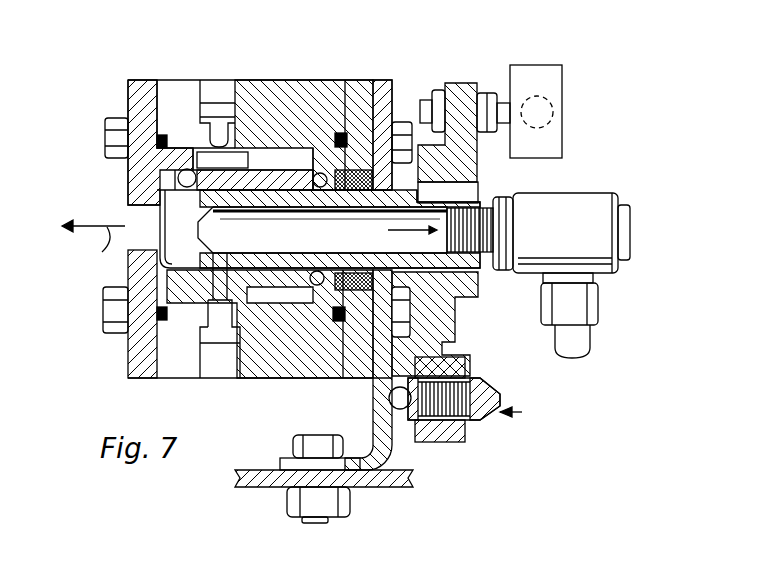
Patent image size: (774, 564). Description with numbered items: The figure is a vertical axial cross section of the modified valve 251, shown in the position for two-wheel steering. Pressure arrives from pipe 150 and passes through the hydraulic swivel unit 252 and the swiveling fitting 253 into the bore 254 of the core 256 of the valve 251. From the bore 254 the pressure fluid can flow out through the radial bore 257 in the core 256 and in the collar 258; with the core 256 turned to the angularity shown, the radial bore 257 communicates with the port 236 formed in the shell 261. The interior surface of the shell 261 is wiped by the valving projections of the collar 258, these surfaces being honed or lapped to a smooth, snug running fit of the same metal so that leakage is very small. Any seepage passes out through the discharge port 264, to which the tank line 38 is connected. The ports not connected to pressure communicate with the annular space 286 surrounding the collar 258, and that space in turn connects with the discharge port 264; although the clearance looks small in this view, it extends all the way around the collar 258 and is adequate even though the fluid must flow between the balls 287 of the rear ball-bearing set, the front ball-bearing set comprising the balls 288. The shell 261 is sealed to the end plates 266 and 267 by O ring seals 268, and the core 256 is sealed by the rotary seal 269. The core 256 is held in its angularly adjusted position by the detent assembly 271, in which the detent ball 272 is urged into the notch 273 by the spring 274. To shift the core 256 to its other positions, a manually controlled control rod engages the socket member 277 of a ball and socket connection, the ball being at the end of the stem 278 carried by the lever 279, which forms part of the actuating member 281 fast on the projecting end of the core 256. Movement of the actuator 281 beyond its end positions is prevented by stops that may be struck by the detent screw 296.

The valve 251 is at (147, 77).
The annular space 286 is at (307, 147).
The balls 288 is at (327, 168).
The end plate 267 is at (366, 82).
The lever 279 is at (456, 83).
The stem 278 is at (498, 103).
The socket member 277 is at (565, 95).
The balls 287 is at (178, 173).
The discharge port 264 is at (128, 213).
The tank line 38 is at (71, 247).
The radial bore 257 is at (222, 226).
The core 256 is at (308, 250).
The bore 254 is at (368, 245).
The rotary seal 269 is at (380, 236).
The swiveling fitting 253 is at (505, 202).
The hydraulic swivel unit 252 is at (600, 198).
The O ring seals 268 is at (390, 315).
The actuating member 281 is at (477, 287).
The pipe 150 is at (577, 345).
The collar 258 is at (266, 292).
The end plate 266 is at (145, 378).
The port 236 is at (220, 332).
The shell 261 is at (272, 372).
The notch 273 is at (388, 397).
The detent assembly 271 is at (520, 412).
The spring 274 is at (465, 422).
The detent ball 272 is at (415, 395).
The detent screw 296 is at (462, 442).